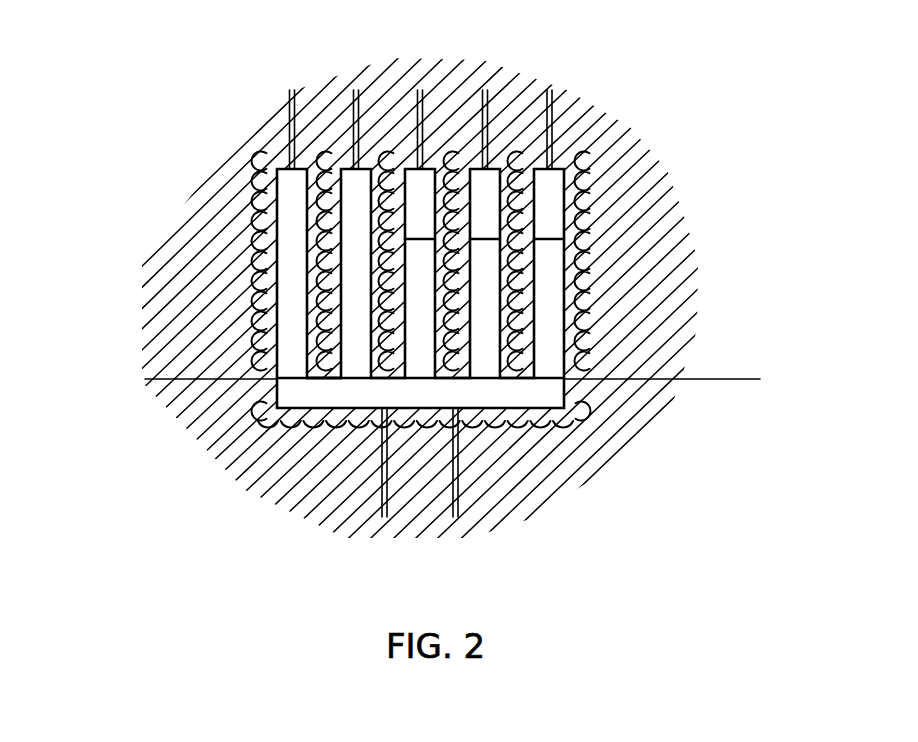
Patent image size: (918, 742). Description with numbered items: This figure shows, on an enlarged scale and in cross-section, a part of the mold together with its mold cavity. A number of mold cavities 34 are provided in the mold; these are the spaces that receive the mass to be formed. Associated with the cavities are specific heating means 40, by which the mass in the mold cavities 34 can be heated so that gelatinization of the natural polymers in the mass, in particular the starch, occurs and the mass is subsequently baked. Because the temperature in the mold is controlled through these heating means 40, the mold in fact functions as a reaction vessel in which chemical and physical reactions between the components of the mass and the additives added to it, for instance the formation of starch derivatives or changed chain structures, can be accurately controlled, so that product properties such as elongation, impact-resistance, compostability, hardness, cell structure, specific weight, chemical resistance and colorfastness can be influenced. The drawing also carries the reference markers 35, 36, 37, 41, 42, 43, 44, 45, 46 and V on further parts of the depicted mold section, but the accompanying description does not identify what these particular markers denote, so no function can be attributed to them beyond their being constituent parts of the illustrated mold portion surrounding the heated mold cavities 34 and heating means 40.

The mold cavities 34 is at (552, 314).
The lead wire 35 is at (453, 500).
The lead wire 36 is at (456, 411).
The lead wire 37 is at (551, 90).
The heating means 40 is at (588, 174).
The boundary line 41 is at (547, 252).
The molded resin body 42 is at (205, 290).
The base portion 43 is at (327, 395).
The molded resin body (lower part) 44 is at (543, 475).
The slot bottom 45 is at (330, 376).
The coil springs 46 is at (390, 147).
The reference plane V is at (735, 378).